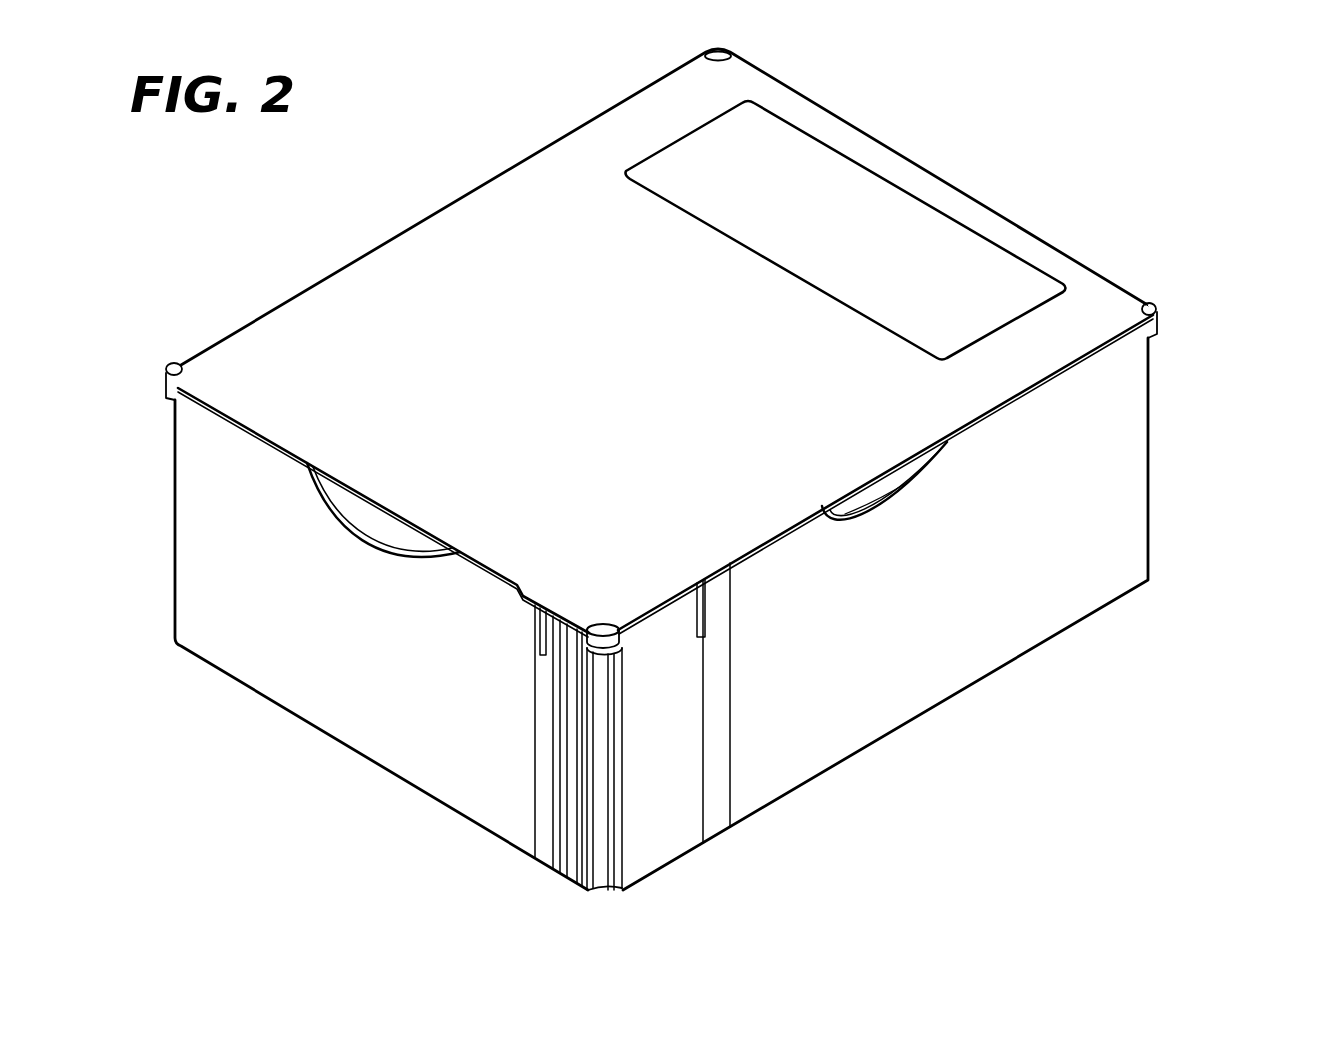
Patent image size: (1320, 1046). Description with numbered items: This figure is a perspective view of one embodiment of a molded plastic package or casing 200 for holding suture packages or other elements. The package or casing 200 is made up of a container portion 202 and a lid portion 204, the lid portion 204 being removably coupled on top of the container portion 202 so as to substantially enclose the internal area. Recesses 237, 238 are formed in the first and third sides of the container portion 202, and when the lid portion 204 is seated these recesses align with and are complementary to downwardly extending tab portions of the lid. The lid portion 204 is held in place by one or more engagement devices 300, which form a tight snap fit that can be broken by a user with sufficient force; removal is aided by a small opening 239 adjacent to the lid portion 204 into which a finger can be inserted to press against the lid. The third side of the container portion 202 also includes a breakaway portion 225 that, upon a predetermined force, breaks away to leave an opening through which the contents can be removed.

The package or casing 200 is at (938, 131).
The lid portion 204 is at (487, 237).
The engagement device 300 is at (1162, 311).
The container portion 202 is at (1043, 617).
The breakaway portion 225 is at (652, 817).
The recess 237 is at (375, 537).
The recess 238 is at (915, 481).
The small opening 239 is at (882, 495).